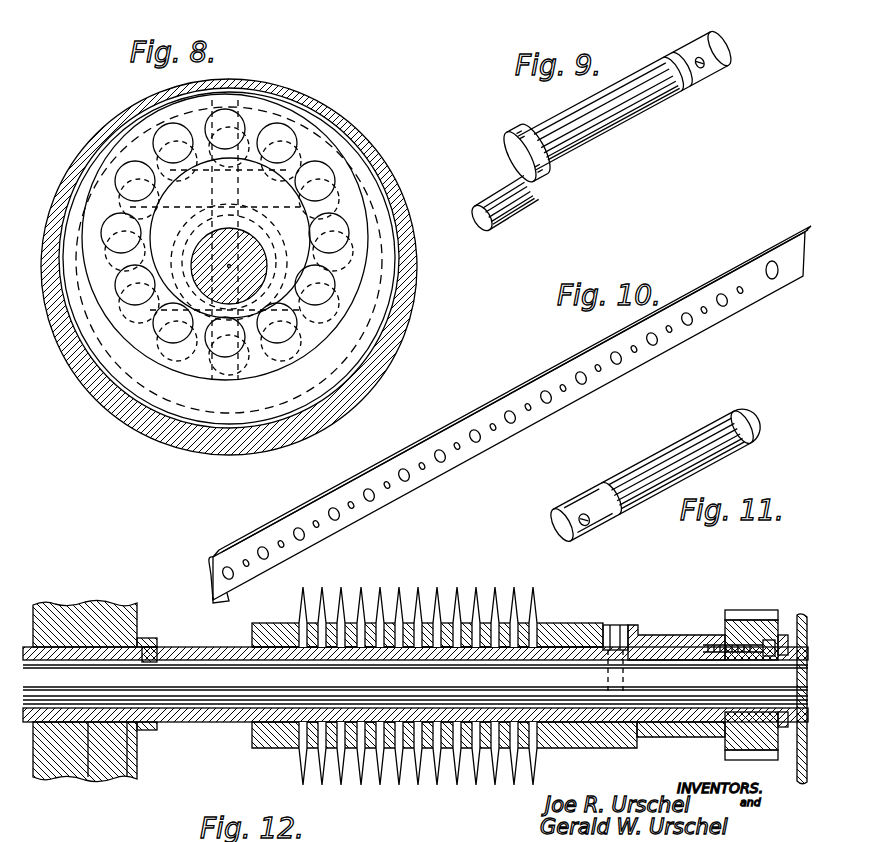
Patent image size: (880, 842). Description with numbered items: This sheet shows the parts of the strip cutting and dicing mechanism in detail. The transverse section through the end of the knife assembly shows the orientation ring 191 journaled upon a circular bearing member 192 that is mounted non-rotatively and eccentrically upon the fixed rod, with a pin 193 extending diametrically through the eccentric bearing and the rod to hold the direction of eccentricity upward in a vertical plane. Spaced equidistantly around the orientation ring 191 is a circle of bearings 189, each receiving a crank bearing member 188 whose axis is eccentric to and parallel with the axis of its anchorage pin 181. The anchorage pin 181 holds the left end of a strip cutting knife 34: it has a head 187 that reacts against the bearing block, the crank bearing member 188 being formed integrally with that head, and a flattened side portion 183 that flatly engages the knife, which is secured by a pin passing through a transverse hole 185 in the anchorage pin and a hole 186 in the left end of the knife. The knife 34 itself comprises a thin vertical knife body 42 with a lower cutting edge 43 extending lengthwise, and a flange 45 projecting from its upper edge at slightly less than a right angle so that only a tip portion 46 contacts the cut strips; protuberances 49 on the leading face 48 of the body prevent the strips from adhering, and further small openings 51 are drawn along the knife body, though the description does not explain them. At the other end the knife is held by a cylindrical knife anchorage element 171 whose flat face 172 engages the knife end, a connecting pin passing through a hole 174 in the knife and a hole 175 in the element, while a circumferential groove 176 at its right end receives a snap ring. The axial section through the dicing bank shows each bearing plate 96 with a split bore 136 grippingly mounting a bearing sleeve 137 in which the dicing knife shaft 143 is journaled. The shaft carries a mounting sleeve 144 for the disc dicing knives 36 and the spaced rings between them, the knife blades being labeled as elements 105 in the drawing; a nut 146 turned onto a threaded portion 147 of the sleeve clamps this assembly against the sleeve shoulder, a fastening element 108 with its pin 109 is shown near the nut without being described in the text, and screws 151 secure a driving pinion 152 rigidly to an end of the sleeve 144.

In FIG. 8, the orientation ring 191 is at (130, 140).
In FIG. 8, the circular bearing member 192 is at (297, 227).
In FIG. 8, the crank bearing member 188 is at (226, 125).
In FIG. 9, the crank bearing member 188 is at (530, 205).
In FIG. 8, the bearings 189 is at (247, 118).
In FIG. 8, the pin 193 is at (233, 243).
In FIG. 9, the anchorage pin 181 is at (630, 115).
In FIG. 9, the flattened side portion 183 is at (690, 84).
In FIG. 9, the transverse hole 185 is at (703, 57).
In FIG. 9, the head 187 is at (518, 135).
In FIG. 10, the flange 45 is at (447, 433).
In FIG. 10, the tip portion 46 is at (485, 404).
In FIG. 10, the leading face 48 is at (447, 462).
In FIG. 10, the protuberances 49 is at (298, 528).
In FIG. 10, the small holes 51 is at (411, 484).
In FIG. 10, the strip cutting knife 34 is at (210, 552).
In FIG. 10, the knife body 42 is at (211, 562).
In FIG. 10, the cutting edge 43 is at (214, 600).
In FIG. 10, the hole 186 is at (230, 566).
In FIG. 10, the hole 174 is at (772, 280).
In FIG. 11, the cylindrical knife anchorage element 171 is at (658, 463).
In FIG. 11, the flat face 172 is at (603, 492).
In FIG. 11, the hole 175 is at (587, 518).
In FIG. 11, the circumferential groove 176 is at (742, 407).
In FIG. 12, the dicing knife shaft 143 is at (185, 703).
In FIG. 12, the mounting sleeve 144 is at (370, 653).
In FIG. 12, the threaded portion 147 is at (283, 648).
In FIG. 12, the nut 146 is at (278, 747).
In FIG. 12, the knives 105 is at (485, 605).
In FIG. 12, the dicing knives 36 is at (437, 786).
In FIG. 12, the nut 108 is at (603, 625).
In FIG. 12, the pin 109 is at (618, 628).
In FIG. 12, the driving pinion 152 is at (733, 612).
In FIG. 12, the screws 151 is at (753, 652).
In FIG. 12, the split bore 136 is at (85, 773).
In FIG. 12, the bearing sleeve 137 is at (128, 777).
In FIG. 12, the bearing plate 96 is at (70, 762).